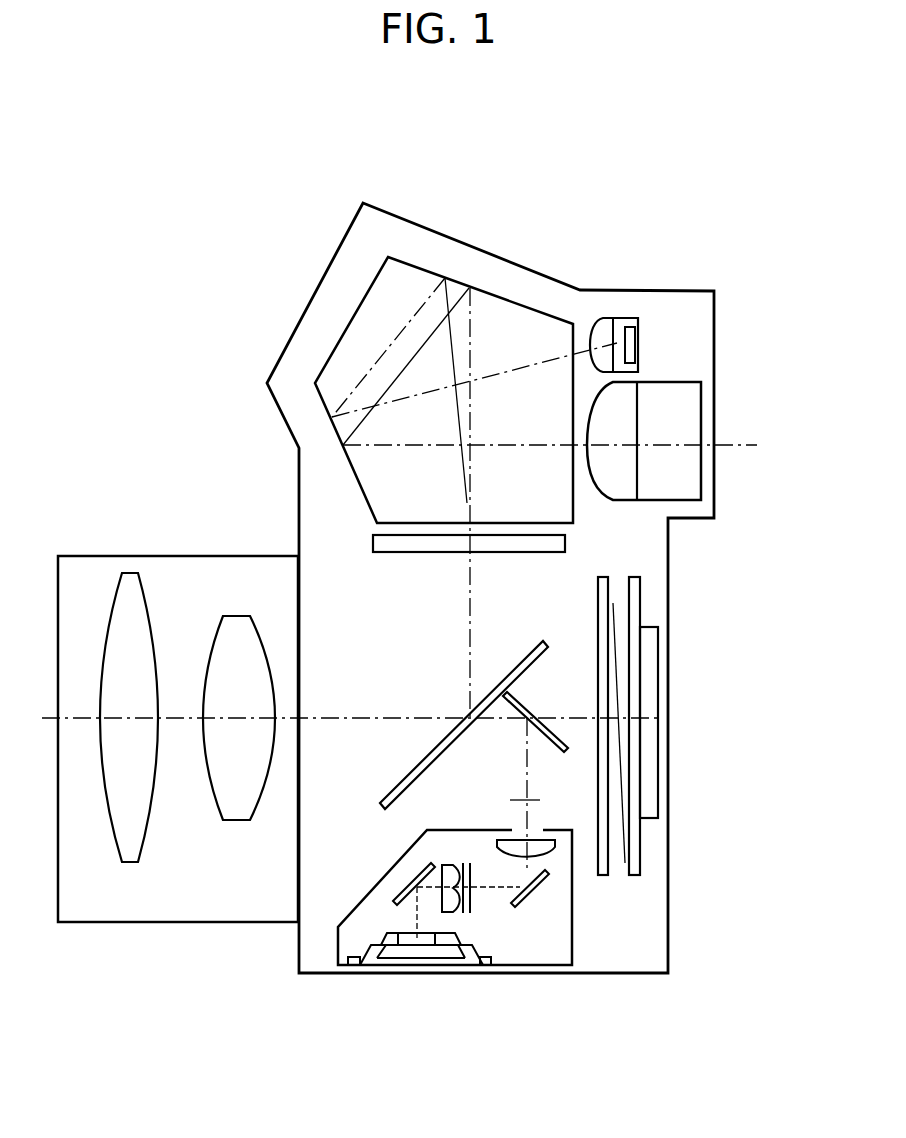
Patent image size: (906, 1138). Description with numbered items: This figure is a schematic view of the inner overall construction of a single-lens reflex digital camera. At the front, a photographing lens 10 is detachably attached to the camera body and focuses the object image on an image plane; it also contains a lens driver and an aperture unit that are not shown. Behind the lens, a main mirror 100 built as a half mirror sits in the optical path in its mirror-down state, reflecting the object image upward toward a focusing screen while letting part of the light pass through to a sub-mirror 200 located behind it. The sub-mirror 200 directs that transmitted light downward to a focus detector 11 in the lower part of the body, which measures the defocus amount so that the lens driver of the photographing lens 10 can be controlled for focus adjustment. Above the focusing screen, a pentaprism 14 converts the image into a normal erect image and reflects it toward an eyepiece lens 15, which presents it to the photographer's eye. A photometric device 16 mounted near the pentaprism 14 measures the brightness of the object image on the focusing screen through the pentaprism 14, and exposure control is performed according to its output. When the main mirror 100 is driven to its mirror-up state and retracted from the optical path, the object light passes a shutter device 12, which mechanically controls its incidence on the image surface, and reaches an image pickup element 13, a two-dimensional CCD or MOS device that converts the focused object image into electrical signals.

The photographing lens 10 is at (257, 867).
The focus detector 11 is at (513, 940).
The shutter device 12 is at (615, 625).
The image pickup element 13 is at (653, 677).
The pentaprism 14 is at (397, 293).
The eyepiece lens 15 is at (620, 415).
The photometric device 16 is at (621, 325).
The main mirror 100 is at (527, 657).
The sub-mirror 200 is at (542, 720).